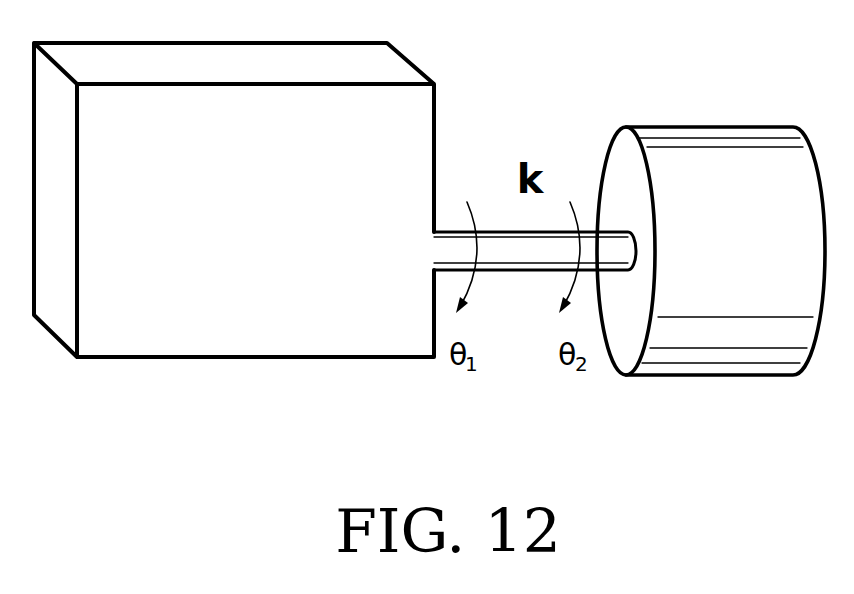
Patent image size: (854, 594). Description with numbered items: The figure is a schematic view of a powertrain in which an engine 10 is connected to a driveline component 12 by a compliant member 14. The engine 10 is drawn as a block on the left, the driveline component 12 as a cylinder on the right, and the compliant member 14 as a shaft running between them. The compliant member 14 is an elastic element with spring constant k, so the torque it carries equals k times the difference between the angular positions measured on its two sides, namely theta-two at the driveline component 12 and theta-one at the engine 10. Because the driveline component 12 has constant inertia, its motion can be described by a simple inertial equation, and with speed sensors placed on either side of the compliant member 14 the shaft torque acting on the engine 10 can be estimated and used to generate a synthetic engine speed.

The engine 10 is at (237, 230).
The compliant member 14 is at (507, 227).
The driveline component 12 is at (732, 259).